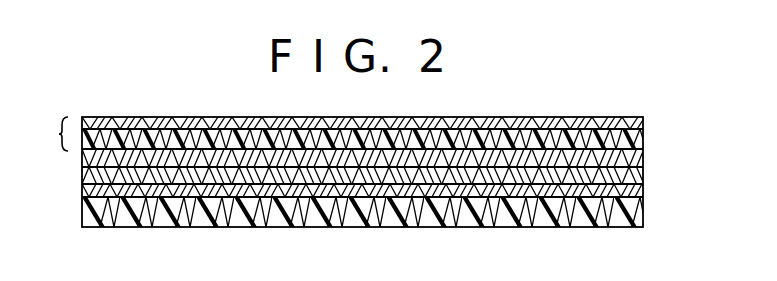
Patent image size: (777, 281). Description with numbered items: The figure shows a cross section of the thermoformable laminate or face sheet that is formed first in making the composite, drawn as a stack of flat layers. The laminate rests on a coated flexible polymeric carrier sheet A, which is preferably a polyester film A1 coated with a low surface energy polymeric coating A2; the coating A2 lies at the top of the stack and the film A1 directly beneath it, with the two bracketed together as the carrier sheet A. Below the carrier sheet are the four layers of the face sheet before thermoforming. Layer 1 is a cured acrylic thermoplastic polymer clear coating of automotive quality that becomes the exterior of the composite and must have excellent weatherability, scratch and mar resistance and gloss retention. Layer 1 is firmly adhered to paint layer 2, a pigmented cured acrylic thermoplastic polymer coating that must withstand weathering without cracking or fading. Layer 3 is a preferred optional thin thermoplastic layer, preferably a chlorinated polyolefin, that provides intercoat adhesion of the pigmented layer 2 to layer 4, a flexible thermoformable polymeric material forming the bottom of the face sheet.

The coated flexible polymeric carrier sheet A is at (59, 134).
The low surface energy polymeric coating A2 is at (637, 116).
The polyester film A1 is at (642, 140).
The clear coating layer 1 is at (647, 158).
The paint layer 2 is at (645, 175).
The intercoat adhesion layer 3 is at (645, 190).
The flexible thermoformable polymeric material layer 4 is at (645, 218).